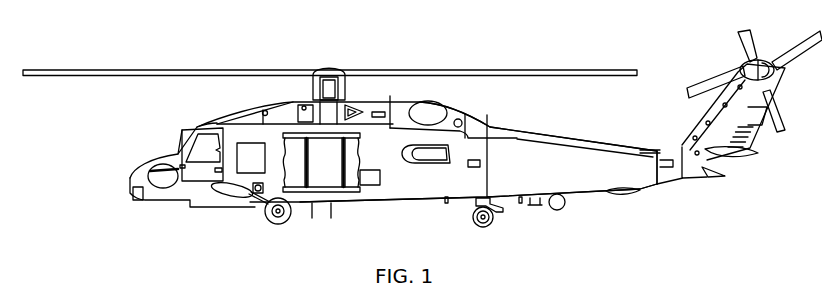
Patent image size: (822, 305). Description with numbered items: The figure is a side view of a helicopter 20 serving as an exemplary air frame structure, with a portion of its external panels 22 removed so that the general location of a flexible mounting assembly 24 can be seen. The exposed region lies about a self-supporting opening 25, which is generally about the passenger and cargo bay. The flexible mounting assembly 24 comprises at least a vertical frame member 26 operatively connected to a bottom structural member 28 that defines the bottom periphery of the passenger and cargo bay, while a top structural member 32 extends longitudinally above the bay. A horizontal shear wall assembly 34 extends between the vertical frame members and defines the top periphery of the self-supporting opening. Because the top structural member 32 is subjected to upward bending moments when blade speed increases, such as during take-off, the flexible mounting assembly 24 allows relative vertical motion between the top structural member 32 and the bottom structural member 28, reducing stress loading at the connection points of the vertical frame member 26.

The helicopter 20 is at (495, 237).
The external panels 22 is at (382, 153).
The flexible mounting assembly 24 is at (285, 155).
The self-supporting opening 25 is at (323, 150).
The vertical frame member 26 is at (324, 227).
The bottom structural member 28 is at (357, 193).
The top structural member 32 is at (362, 117).
The horizontal shear wall assembly 34 is at (287, 155).